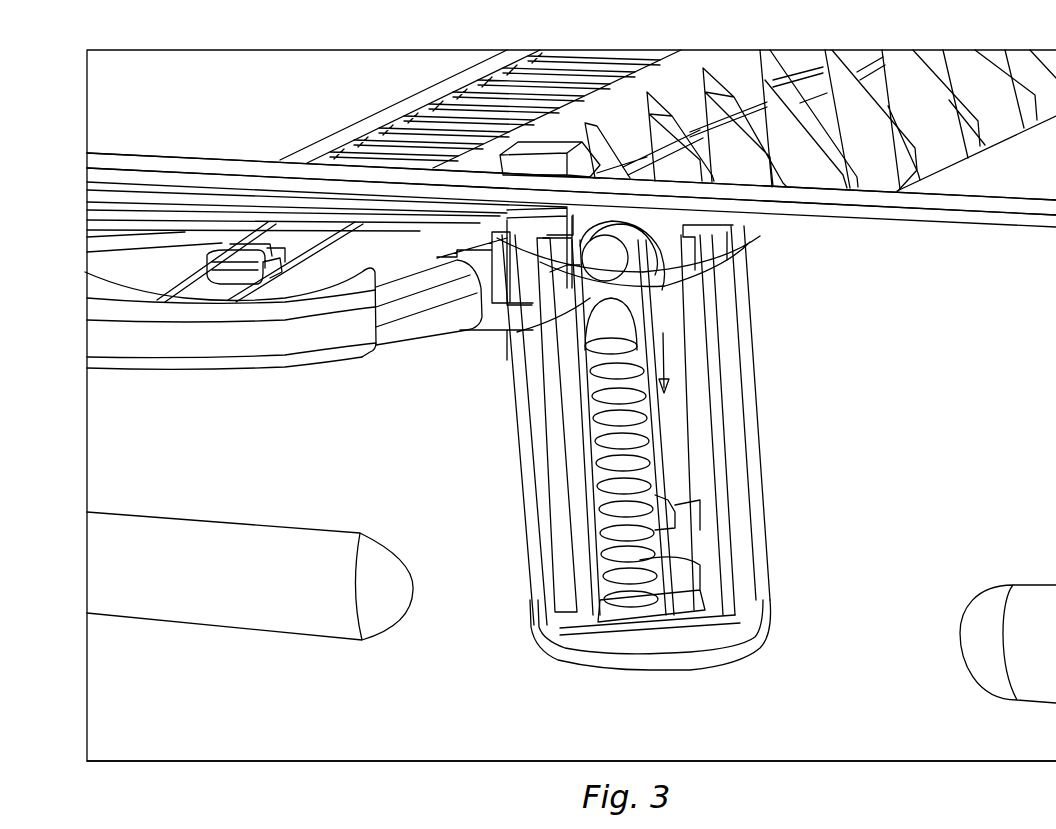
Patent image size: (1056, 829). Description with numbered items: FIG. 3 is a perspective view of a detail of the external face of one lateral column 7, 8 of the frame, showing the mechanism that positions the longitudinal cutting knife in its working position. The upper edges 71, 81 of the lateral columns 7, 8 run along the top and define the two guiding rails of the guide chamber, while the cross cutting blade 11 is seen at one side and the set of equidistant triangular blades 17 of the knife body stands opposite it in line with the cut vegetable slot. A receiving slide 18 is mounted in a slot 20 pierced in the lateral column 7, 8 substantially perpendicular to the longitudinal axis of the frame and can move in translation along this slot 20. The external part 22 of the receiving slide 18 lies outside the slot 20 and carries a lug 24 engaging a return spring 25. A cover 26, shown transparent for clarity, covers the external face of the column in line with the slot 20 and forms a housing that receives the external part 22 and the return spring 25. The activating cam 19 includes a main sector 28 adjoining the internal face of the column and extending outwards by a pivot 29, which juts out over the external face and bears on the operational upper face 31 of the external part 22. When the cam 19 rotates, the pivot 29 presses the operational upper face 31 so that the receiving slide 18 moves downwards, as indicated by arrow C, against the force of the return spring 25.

The lateral column 7 is at (440, 697).
The lateral column 8 is at (440, 697).
The upper edge 71 is at (928, 201).
The upper edge 81 is at (928, 201).
The cross cutting blade 11 is at (320, 337).
The triangular blades 17 is at (722, 118).
The receiving slide 18 is at (577, 440).
The activating cam 19 is at (538, 146).
The slot 20 is at (697, 603).
The external part 22 is at (673, 452).
The lug 24 is at (610, 322).
The return spring 25 is at (672, 517).
The cover 26 is at (540, 560).
The main sector 28 is at (580, 155).
The pivot 29 is at (605, 265).
The operational upper face 31 is at (650, 283).